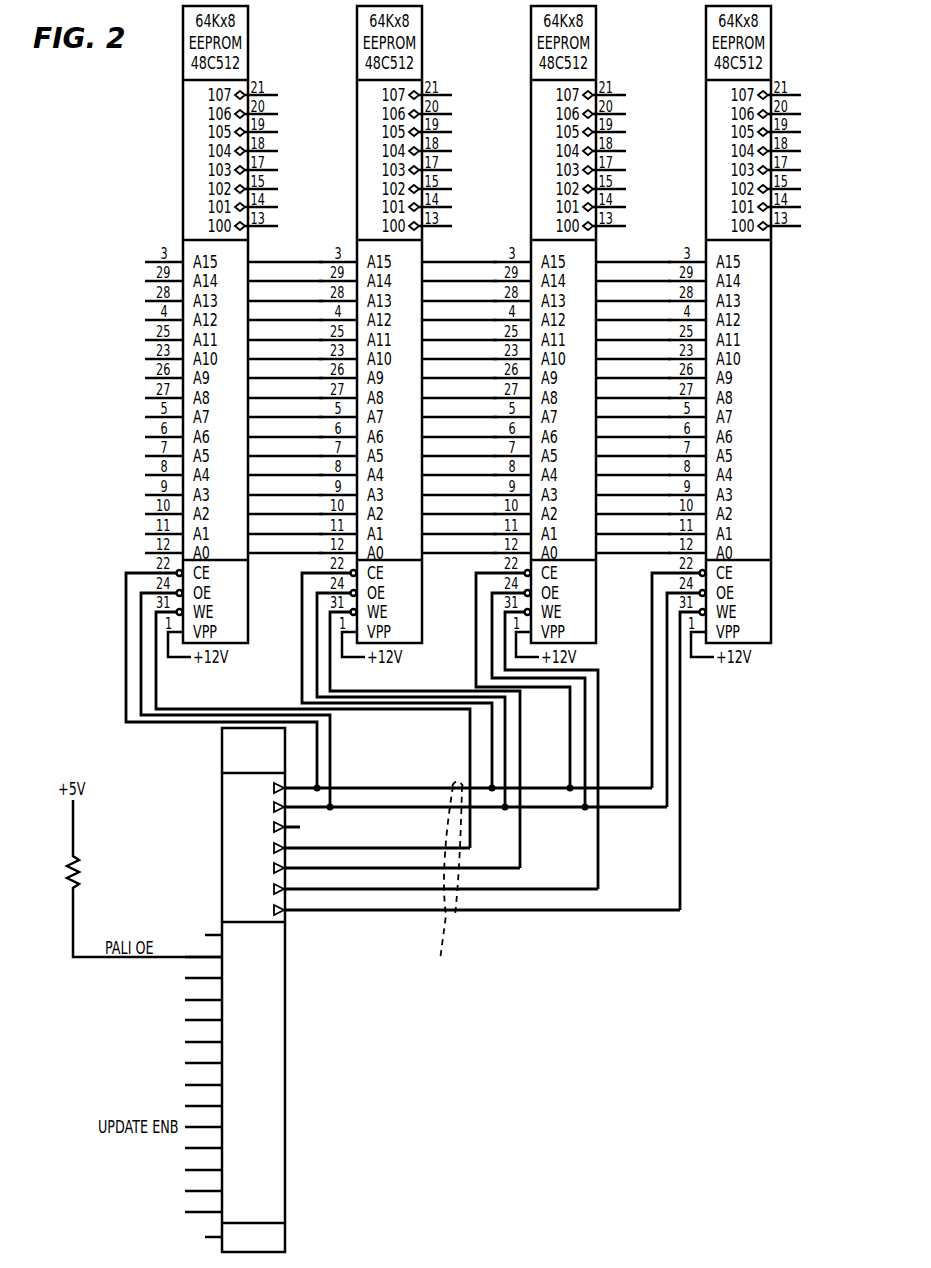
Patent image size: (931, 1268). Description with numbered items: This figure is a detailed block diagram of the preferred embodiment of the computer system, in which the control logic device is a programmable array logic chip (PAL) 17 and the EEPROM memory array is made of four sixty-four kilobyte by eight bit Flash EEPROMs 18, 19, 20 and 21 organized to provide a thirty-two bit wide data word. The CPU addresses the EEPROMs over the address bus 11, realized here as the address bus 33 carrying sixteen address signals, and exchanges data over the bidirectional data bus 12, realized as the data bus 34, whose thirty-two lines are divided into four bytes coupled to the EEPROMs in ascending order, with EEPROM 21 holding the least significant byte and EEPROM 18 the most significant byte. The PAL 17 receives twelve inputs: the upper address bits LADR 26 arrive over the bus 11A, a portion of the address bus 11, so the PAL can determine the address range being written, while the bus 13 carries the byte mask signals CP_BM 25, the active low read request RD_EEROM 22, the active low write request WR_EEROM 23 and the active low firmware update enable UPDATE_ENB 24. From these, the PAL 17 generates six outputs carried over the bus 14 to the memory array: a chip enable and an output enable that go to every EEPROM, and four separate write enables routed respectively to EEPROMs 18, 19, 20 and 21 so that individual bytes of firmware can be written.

The address bus 11 is at (43, 247).
The bus 11A is at (53, 950).
The bidirectional data bus 12 is at (591, 158).
The bus 13 is at (53, 1042).
The bus 14 is at (442, 885).
The programmable array logic chip 17 is at (285, 1083).
The EEPROM 18 is at (227, 334).
The EEPROM 19 is at (401, 334).
The EEPROM 20 is at (575, 334).
The EEPROM 21 is at (750, 334).
The RD_EEROM signal 22 is at (101, 1064).
The WR_EEROM signal 23 is at (101, 1088).
The UPDATE_ENB signal 24 is at (101, 1109).
The CP_BM 3:0 signals 25 is at (102, 1140).
The LADR 17:13 address bits 26 is at (100, 968).
The address bus 33 is at (71, 247).
The bidirectional data bus 34 is at (558, 158).